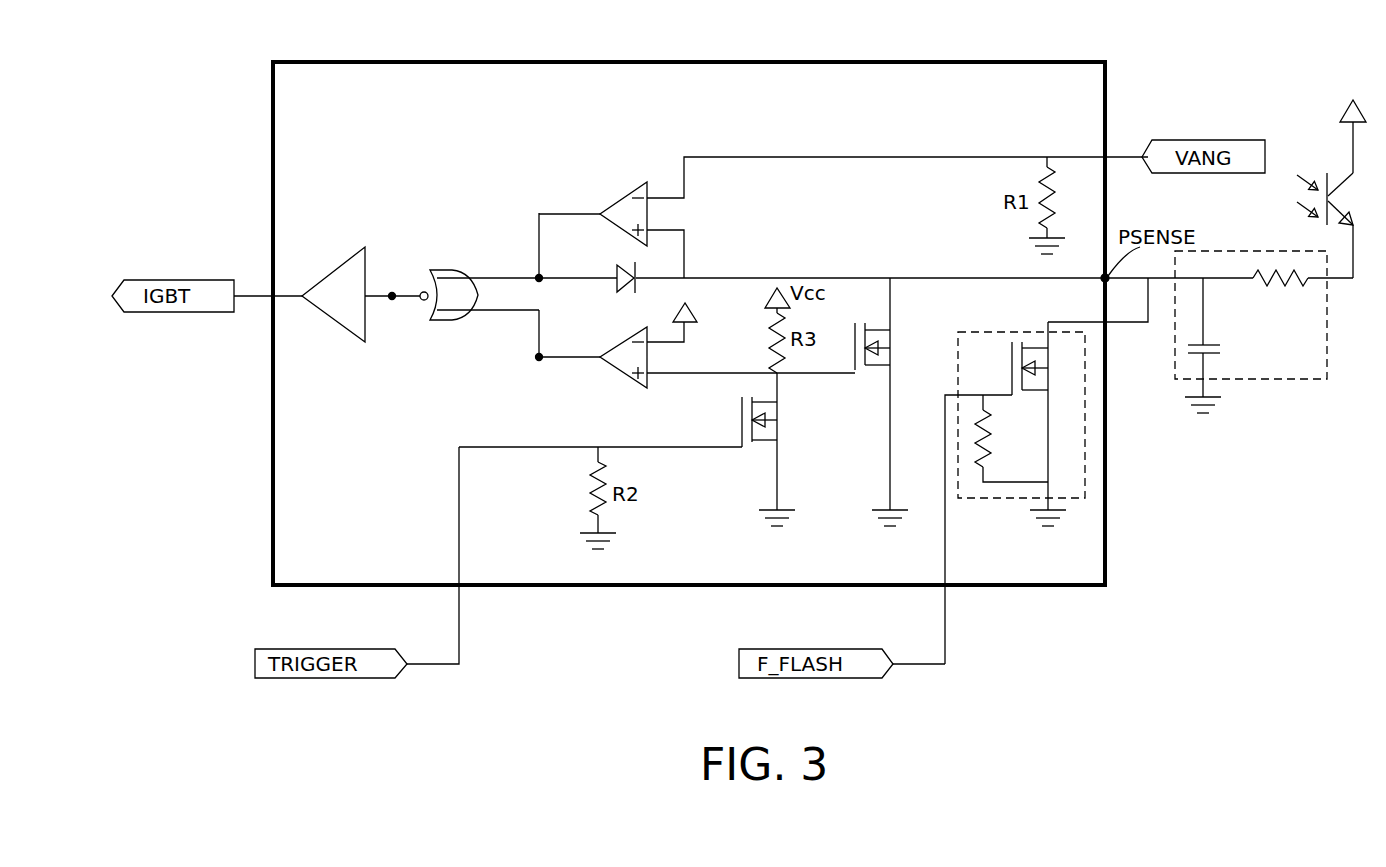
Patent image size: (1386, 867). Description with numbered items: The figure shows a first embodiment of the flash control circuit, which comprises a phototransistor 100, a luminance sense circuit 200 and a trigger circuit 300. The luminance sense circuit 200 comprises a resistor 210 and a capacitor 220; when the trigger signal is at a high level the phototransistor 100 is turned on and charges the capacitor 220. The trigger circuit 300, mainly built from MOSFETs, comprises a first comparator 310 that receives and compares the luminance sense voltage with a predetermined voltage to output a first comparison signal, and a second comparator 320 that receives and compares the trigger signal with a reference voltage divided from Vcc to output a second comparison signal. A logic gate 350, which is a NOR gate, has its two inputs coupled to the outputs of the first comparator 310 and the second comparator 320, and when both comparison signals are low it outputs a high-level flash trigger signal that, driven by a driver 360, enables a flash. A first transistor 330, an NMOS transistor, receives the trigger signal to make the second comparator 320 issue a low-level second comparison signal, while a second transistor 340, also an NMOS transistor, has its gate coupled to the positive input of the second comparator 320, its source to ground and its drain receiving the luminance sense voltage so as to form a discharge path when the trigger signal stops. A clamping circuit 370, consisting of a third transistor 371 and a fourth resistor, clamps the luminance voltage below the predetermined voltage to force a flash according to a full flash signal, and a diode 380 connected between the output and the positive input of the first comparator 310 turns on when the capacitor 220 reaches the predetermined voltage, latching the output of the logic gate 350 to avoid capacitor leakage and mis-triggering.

The phototransistor 100 is at (1335, 174).
The luminance sense circuit 200 is at (1264, 345).
The resistor 210 is at (1303, 291).
The capacitor 220 is at (1220, 345).
The trigger circuit 300 is at (910, 62).
The first comparator 310 is at (631, 190).
The second comparator 320 is at (635, 386).
The first transistor 330 is at (627, 449).
The second transistor 340 is at (878, 402).
The logic gate 350 is at (460, 268).
The driver 360 is at (349, 247).
The clamping circuit 370 is at (1046, 471).
The third transistor 371 is at (988, 302).
The diode 380 is at (623, 296).